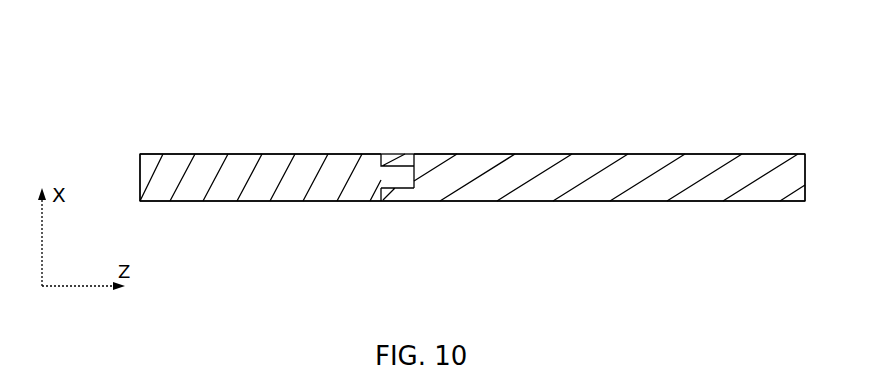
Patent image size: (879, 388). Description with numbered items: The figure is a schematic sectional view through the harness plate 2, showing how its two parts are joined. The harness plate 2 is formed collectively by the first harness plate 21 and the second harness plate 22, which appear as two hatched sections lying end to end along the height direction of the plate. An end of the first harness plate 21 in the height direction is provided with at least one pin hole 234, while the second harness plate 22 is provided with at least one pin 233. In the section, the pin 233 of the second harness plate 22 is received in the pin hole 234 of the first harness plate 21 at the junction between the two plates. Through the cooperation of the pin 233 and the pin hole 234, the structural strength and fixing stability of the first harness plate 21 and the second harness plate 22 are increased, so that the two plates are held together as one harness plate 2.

The harness plate 2 is at (470, 49).
The first harness plate 21 is at (712, 190).
The second harness plate 22 is at (287, 190).
The pin 233 is at (395, 180).
The pin hole 234 is at (415, 154).